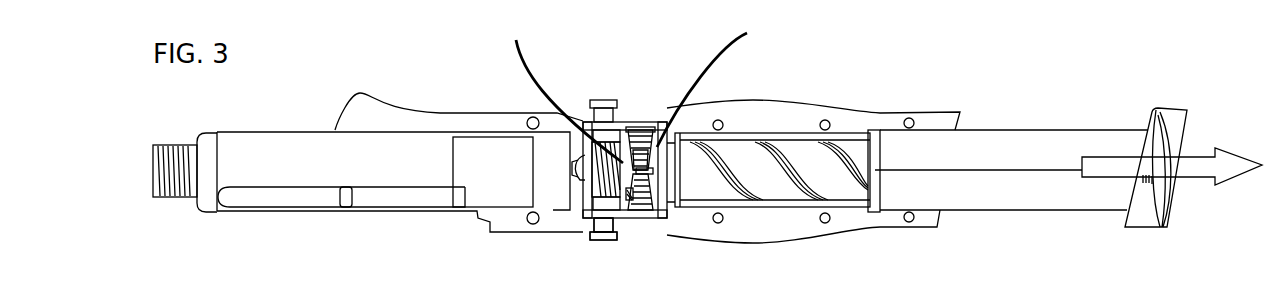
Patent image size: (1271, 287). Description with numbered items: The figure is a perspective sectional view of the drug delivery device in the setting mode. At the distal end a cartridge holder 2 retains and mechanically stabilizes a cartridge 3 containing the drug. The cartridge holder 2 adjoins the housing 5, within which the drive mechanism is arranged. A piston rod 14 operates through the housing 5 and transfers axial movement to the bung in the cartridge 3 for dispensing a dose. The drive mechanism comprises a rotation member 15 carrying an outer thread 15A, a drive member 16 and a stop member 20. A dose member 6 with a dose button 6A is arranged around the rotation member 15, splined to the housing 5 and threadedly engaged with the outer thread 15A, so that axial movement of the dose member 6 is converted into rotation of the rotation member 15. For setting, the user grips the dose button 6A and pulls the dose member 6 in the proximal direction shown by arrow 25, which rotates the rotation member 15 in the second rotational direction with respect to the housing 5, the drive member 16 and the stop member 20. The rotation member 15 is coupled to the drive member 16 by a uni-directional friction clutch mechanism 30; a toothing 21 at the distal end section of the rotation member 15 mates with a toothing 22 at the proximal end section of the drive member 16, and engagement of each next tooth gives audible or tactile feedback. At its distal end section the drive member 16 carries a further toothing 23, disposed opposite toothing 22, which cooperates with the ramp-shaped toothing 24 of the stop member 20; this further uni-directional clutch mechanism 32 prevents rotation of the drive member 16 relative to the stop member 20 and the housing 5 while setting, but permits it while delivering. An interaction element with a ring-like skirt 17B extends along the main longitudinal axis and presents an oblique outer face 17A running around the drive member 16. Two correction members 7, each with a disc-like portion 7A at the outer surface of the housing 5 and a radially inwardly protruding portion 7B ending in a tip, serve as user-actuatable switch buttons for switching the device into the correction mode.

The cartridge holder 2 is at (278, 131).
The cartridge 3 is at (493, 130).
The housing 5 is at (778, 100).
The dose member 6 is at (1068, 130).
The dose button 6A is at (1175, 115).
The correction member 7 is at (601, 100).
The disc-like portion 7A is at (592, 238).
The protruding portion 7B is at (593, 232).
The piston rod 14 is at (573, 183).
The rotation member 15 is at (785, 190).
The outer thread 15A is at (853, 163).
The drive member 16 is at (648, 145).
The oblique outer face 17A is at (590, 138).
The skirt 17B is at (610, 135).
The stop member 20 is at (627, 182).
The toothing 21 is at (652, 165).
The toothing 22 is at (650, 180).
The further toothing 23 is at (640, 170).
The toothing 24 is at (632, 131).
The arrow 25 is at (1202, 178).
The uni-directional clutch mechanism 30 is at (715, 78).
The further uni-directional clutch mechanism 32 is at (560, 86).